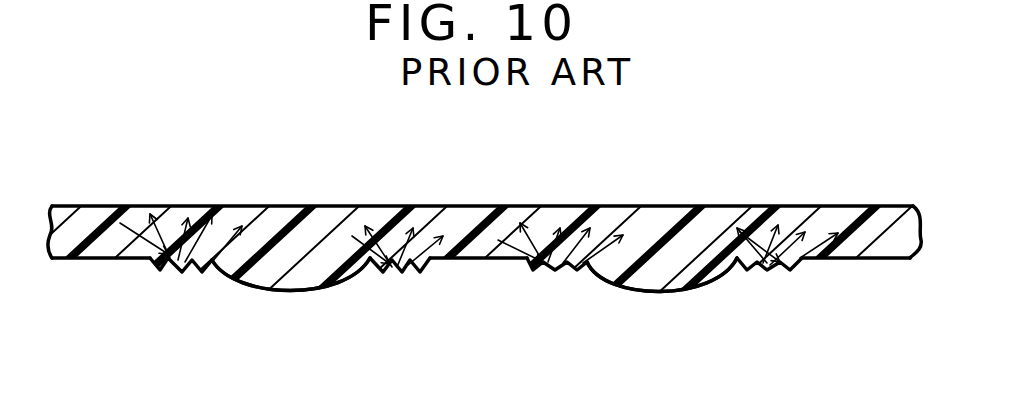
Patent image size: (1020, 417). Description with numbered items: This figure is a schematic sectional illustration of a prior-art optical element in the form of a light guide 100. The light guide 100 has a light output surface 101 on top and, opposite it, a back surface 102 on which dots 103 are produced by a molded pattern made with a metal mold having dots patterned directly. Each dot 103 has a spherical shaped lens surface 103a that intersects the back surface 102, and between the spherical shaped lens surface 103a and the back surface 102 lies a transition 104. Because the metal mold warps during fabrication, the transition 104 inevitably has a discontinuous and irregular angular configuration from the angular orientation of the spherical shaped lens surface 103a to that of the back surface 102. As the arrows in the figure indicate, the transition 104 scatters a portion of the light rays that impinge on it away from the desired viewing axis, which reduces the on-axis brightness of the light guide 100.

The light guide 100 is at (212, 200).
The light output surface 101 is at (605, 206).
The back surface 102 is at (482, 259).
The dot 103 is at (332, 290).
The spherical shaped lens surface 103a is at (253, 285).
The transition 104 is at (182, 262).